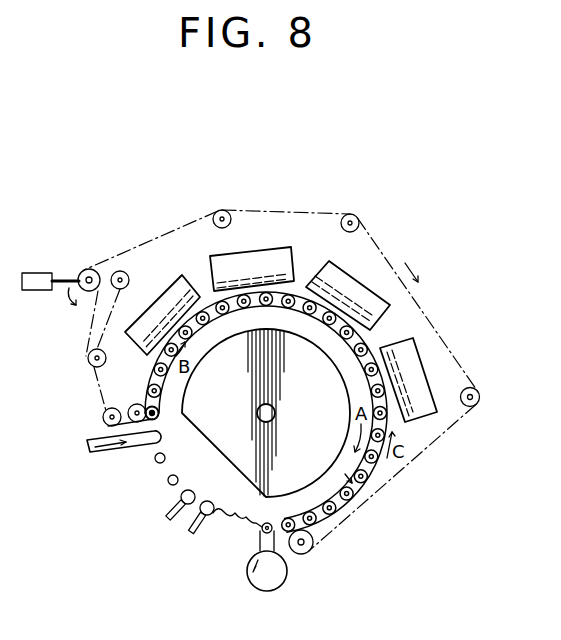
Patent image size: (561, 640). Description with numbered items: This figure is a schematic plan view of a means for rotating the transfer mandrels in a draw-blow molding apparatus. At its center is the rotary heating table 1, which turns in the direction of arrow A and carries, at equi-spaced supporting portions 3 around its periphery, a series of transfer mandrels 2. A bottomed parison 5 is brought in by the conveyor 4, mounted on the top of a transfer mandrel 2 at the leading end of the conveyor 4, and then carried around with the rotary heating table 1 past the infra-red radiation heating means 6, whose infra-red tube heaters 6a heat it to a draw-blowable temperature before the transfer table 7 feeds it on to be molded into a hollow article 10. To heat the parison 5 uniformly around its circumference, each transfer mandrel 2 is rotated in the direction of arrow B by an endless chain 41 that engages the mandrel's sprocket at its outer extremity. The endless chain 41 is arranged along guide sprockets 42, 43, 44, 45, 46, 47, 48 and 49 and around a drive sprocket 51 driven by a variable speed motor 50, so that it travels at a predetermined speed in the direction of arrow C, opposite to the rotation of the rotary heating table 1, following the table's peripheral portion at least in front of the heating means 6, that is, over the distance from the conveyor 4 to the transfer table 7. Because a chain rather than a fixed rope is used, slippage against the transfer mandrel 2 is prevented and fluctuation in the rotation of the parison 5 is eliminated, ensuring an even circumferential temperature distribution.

The rotary heating table 1 is at (350, 498).
The transfer mandrel 2 is at (168, 484).
The supporting portion 3 is at (250, 525).
The conveyor 4 is at (137, 449).
The parison 5 is at (157, 417).
The infra-red radiation heating means 6 is at (249, 259).
The infra-red tube heaters 6a is at (282, 272).
The transfer table 7 is at (273, 580).
The hollow article 10 is at (207, 516).
The endless chain 41 is at (432, 321).
The guide sprocket 42 is at (302, 548).
The guide sprocket 43 is at (478, 394).
The guide sprocket 44 is at (353, 214).
The guide sprocket 45 is at (221, 211).
The guide sprocket 46 is at (127, 277).
The guide sprocket 47 is at (88, 358).
The guide sprocket 48 is at (104, 416).
The guide sprocket 49 is at (133, 406).
The variable speed motor 50 is at (32, 273).
The drive sprocket 51 is at (90, 291).